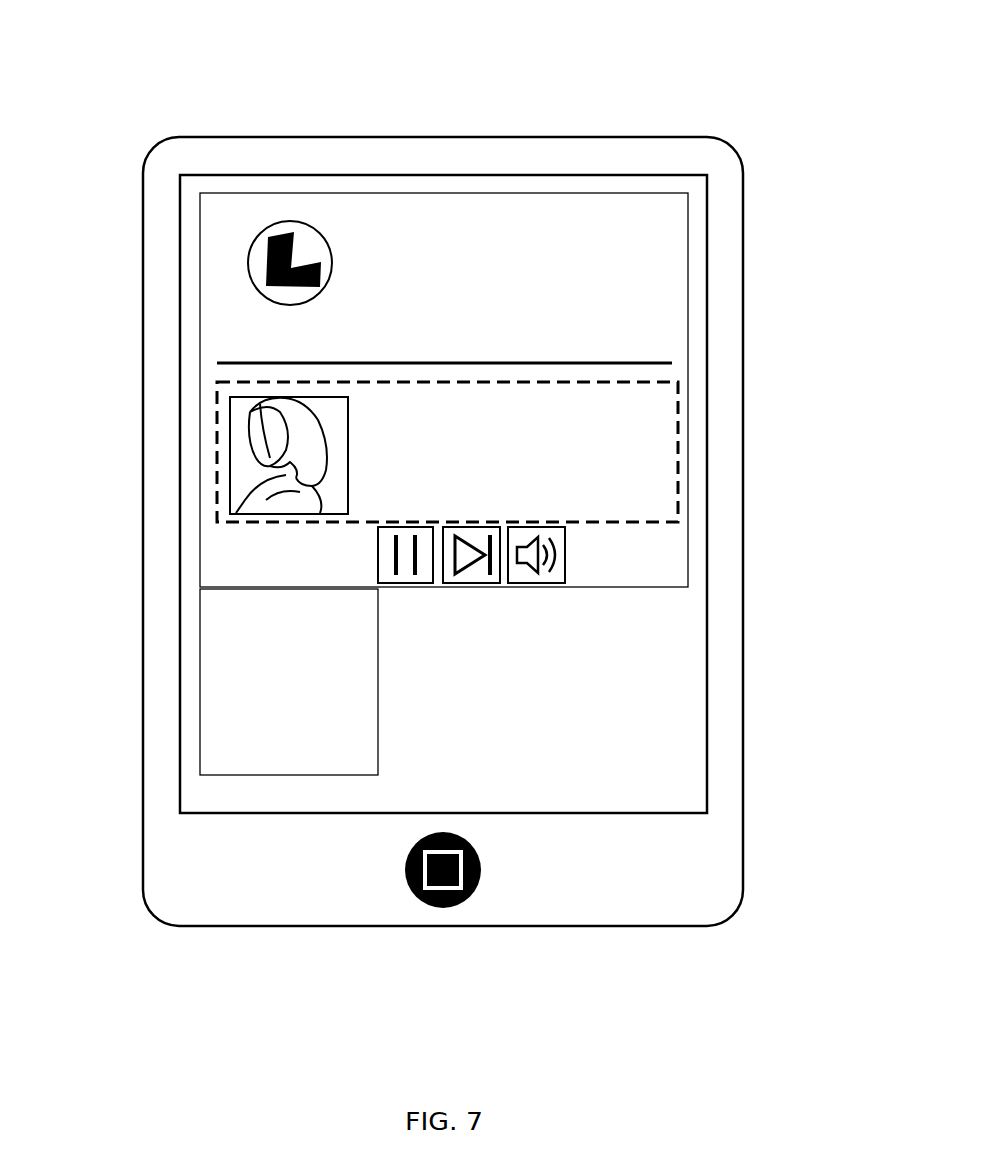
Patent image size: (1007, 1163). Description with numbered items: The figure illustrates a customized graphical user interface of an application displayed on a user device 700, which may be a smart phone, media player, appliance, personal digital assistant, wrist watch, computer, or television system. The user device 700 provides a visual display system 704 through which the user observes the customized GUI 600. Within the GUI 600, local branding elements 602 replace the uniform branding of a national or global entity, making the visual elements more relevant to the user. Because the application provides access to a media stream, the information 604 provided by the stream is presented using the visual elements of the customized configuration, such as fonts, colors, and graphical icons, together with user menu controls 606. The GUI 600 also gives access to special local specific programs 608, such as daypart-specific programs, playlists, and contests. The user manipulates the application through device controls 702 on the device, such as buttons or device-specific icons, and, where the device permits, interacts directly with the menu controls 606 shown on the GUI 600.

The customized GUI 600 is at (595, 230).
The local branding elements 602 is at (500, 330).
The information 604 is at (662, 514).
The menu controls 606 is at (440, 597).
The local specific programs 608 is at (285, 777).
The user device 700 is at (762, 158).
The device controls 702 is at (427, 908).
The visual display system 704 is at (106, 813).